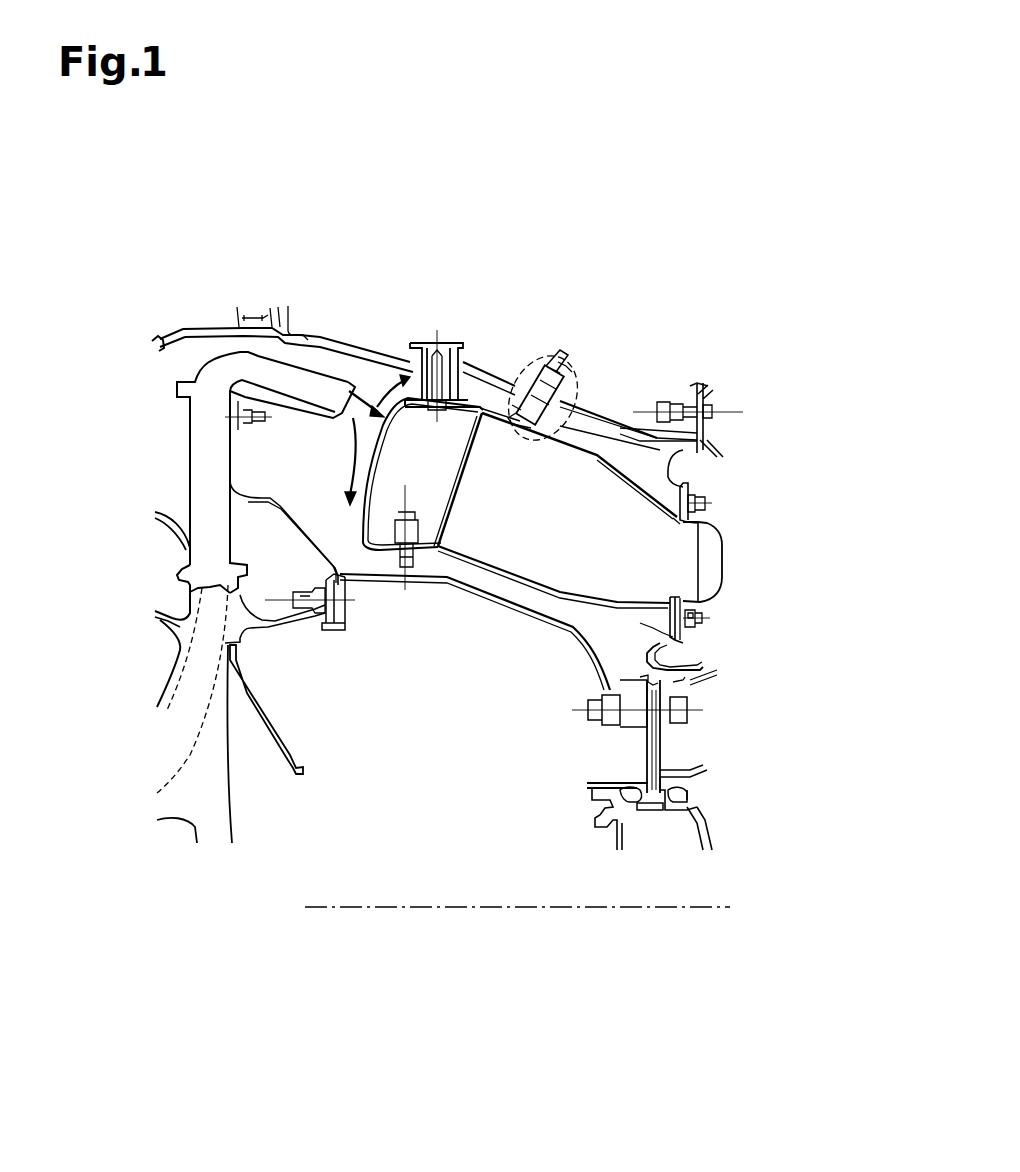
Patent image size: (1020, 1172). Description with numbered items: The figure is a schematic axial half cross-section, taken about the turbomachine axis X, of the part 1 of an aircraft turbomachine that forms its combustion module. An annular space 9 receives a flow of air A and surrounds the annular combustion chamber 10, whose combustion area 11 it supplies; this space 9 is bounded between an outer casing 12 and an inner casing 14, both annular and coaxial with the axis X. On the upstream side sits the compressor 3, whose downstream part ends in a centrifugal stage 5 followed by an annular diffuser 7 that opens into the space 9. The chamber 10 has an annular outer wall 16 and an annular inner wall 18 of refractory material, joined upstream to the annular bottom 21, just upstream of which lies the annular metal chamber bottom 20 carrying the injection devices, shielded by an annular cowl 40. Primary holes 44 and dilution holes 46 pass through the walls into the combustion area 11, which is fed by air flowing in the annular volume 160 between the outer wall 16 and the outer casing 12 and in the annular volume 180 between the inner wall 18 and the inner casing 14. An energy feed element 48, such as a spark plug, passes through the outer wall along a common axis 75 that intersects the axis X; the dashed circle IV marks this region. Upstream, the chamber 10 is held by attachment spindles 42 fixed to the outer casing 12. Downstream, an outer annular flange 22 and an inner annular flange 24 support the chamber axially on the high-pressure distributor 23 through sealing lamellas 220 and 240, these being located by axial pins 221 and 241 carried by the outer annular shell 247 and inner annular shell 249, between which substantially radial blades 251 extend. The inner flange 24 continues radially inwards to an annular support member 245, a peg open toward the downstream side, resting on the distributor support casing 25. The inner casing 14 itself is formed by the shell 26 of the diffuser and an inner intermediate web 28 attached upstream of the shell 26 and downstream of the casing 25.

The part of turbomachine 1 is at (639, 378).
The compressor 3 is at (145, 766).
The centrifugal stage 5 is at (168, 662).
The annular diffuser 7 is at (182, 417).
The space 9 is at (305, 452).
The annular combustion chamber 10 is at (494, 386).
The combustion area 11 is at (562, 517).
The outer casing 12 is at (354, 338).
The inner casing 14 is at (563, 636).
The annular outer wall 16 is at (613, 473).
The annular inner wall 18 is at (548, 592).
The annular metal chamber bottom 20 is at (448, 522).
The bottom 21 is at (457, 500).
The outer annular flange 22 is at (697, 450).
The distributor 23 is at (693, 559).
The inner annular flange 24 is at (667, 643).
The casing 25 is at (687, 678).
The shell of the diffuser 26 is at (315, 535).
The inner intermediate web 28 is at (497, 597).
The annular cowl 40 is at (377, 468).
The attachment spindles 42 is at (430, 342).
The primary holes 44 is at (558, 372).
The dilution holes 46 is at (617, 443).
The energy feed element 48 is at (520, 380).
The common axis 75 is at (550, 372).
The annular volume 160 is at (620, 408).
The annular volume 180 is at (467, 576).
The sealing lamellas 220 is at (693, 484).
The axial pins 221 is at (707, 500).
The sealing lamellas 240 is at (702, 627).
The axial pins 241 is at (702, 612).
The annular support member 245 is at (703, 660).
The outer annular shell 247 is at (693, 532).
The inner annular shell 249 is at (640, 620).
The radial blades 251 is at (703, 582).
The flow of air A is at (320, 440).
The detail view IV is at (520, 363).
The axis X is at (335, 908).